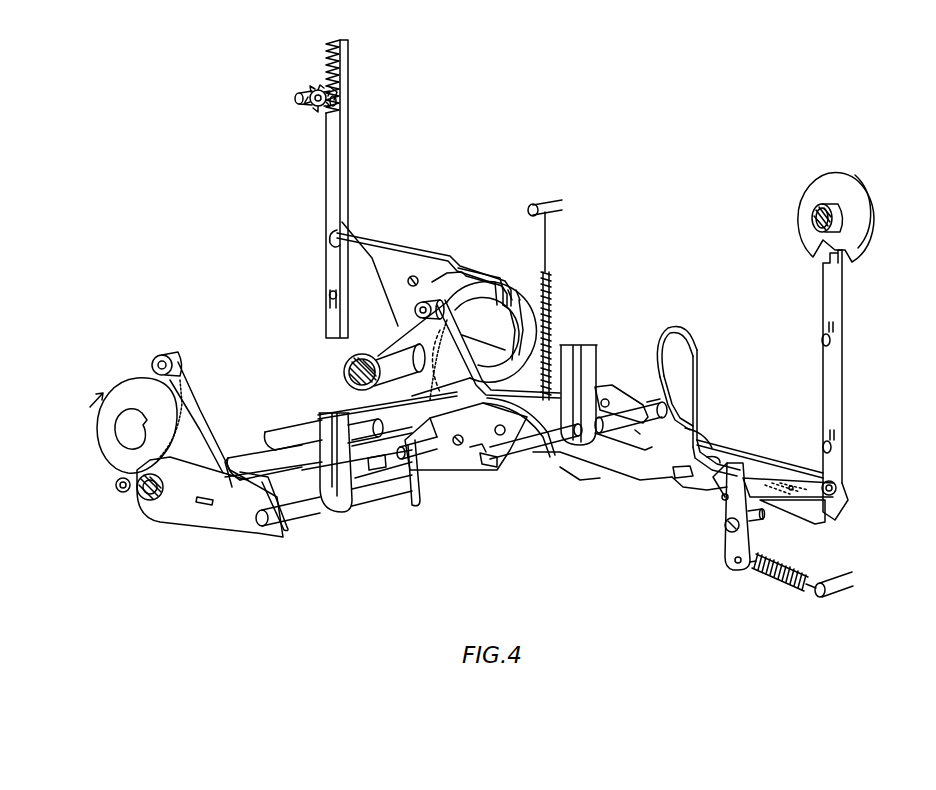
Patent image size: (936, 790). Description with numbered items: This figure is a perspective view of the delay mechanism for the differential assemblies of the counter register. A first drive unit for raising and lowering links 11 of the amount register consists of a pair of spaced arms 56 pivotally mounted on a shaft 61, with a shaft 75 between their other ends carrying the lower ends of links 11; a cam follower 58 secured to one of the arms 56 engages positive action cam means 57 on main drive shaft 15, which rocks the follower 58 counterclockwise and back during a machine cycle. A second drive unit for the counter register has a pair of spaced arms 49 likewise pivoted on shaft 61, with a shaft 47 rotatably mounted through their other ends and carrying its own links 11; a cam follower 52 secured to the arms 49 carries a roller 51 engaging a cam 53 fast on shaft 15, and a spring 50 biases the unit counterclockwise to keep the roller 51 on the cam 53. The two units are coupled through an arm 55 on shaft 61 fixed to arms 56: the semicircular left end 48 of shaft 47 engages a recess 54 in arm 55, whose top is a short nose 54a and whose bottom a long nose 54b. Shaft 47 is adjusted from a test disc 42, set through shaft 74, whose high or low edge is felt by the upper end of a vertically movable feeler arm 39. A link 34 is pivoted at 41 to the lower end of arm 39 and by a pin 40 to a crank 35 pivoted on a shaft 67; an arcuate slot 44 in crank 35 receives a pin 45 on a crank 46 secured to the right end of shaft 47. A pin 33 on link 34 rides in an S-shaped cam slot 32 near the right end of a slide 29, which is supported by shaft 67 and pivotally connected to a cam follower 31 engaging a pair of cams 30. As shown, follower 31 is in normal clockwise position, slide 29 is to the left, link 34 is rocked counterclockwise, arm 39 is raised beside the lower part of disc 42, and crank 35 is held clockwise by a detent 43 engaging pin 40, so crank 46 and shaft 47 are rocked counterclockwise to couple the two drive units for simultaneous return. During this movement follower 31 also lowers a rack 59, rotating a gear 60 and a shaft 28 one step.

The links 11 is at (586, 447).
The main drive shaft 15 is at (345, 376).
The shaft 28 is at (294, 111).
The slide 29 is at (710, 447).
The cams 30 is at (523, 290).
The cam follower 31 is at (410, 257).
The S-shaped cam slot 32 is at (803, 510).
The pin 33 is at (793, 490).
The link 34 is at (800, 470).
The crank 35 is at (693, 360).
The feeler arm 39 is at (837, 290).
The pin 40 is at (727, 500).
The pivotal connection 41 is at (835, 486).
The test disc 42 is at (857, 197).
The detent 43 is at (732, 552).
The arcuate slot 44 is at (687, 347).
The pin 45 is at (688, 420).
The crank 46 is at (660, 395).
The shaft 47 is at (633, 380).
The left end of shaft 48 is at (490, 453).
The arms 49 is at (603, 477).
The spring 50 is at (542, 340).
The roller 51 is at (432, 300).
The cam follower 52 is at (456, 308).
The cam 53 is at (400, 343).
The recess 54 is at (472, 447).
The short nose 54a is at (467, 437).
The long nose 54b is at (480, 447).
The arm 55 is at (455, 457).
The arms 56 is at (290, 538).
The positive action cam means 57 is at (140, 387).
The cam follower 58 is at (190, 393).
The rack 59 is at (323, 330).
The gear 60 is at (322, 110).
The shaft 61 is at (168, 495).
The shaft 67 is at (673, 483).
The shaft 74 is at (813, 218).
The shaft 75 is at (302, 507).